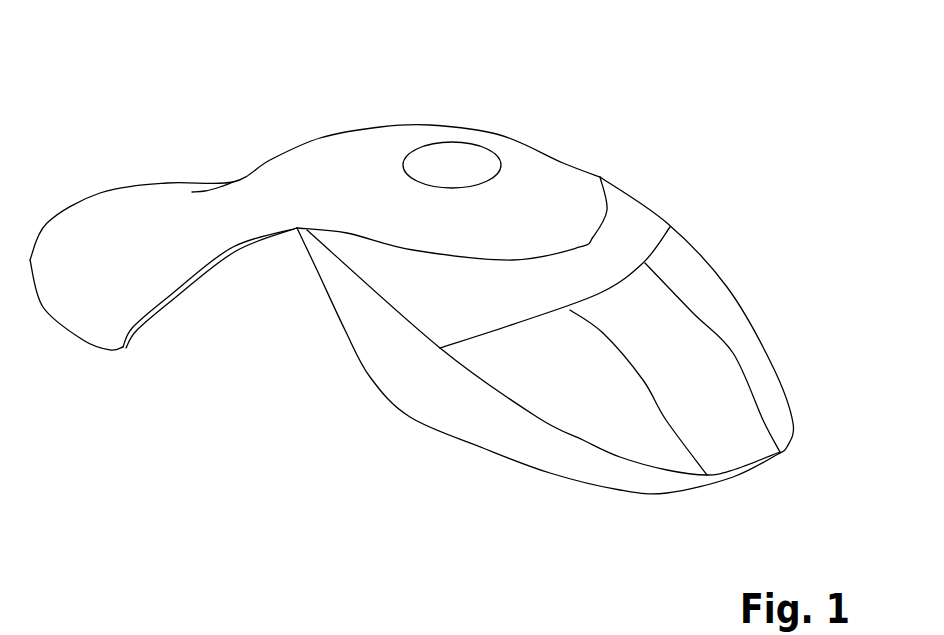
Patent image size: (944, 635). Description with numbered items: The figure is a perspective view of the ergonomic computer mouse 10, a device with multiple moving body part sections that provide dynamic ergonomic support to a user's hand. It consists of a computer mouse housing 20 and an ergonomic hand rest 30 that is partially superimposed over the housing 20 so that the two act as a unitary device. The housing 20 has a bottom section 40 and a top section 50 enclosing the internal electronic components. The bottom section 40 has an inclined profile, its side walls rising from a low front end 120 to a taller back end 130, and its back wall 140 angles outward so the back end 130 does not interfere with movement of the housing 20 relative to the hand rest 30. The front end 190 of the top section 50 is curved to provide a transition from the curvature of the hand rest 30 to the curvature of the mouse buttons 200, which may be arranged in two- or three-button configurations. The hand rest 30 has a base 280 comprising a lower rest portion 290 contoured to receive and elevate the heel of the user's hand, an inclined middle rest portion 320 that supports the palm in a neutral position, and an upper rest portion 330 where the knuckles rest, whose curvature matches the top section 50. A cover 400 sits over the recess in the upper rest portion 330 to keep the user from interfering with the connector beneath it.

The ergonomic computer mouse 10 is at (610, 117).
The computer mouse housing 20 is at (387, 467).
The hand rest 30 is at (192, 138).
The bottom section 40 is at (483, 437).
The top section 50 is at (620, 203).
The front end 120 is at (753, 472).
The back end 130 is at (383, 373).
The back wall 140 is at (335, 312).
The front end of the top section 190 is at (645, 228).
The mouse buttons 200 is at (782, 267).
The base 280 is at (88, 325).
The lower rest portion 290 is at (108, 237).
The middle rest portion 320 is at (300, 170).
The upper rest portion 330 is at (552, 197).
The cover 400 is at (455, 162).